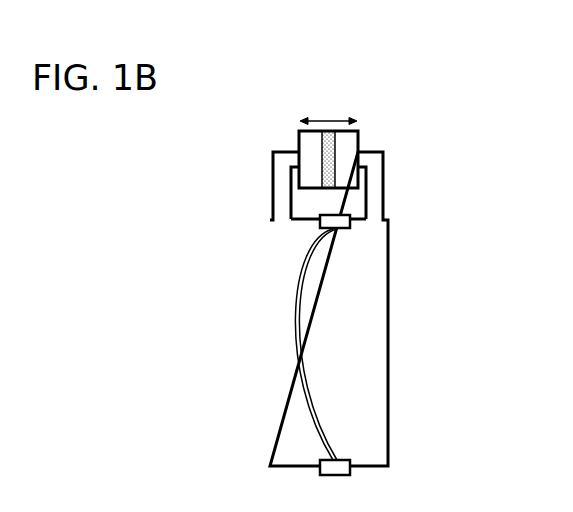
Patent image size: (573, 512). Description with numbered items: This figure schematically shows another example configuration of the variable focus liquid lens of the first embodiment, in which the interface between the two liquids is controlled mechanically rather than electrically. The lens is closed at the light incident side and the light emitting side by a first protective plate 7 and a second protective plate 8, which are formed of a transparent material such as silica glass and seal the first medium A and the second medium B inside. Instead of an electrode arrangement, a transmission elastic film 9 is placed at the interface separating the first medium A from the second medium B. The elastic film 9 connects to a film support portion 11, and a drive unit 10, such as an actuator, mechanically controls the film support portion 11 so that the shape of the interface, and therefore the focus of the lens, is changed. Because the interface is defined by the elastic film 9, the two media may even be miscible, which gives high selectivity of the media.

The first protective plate 7 is at (269, 445).
The second protective plate 8 is at (389, 447).
The transmission elastic film 9 is at (313, 410).
The drive unit 10 is at (359, 136).
The film support portion 11 is at (338, 213).
The first medium A is at (290, 332).
The second medium B is at (368, 324).